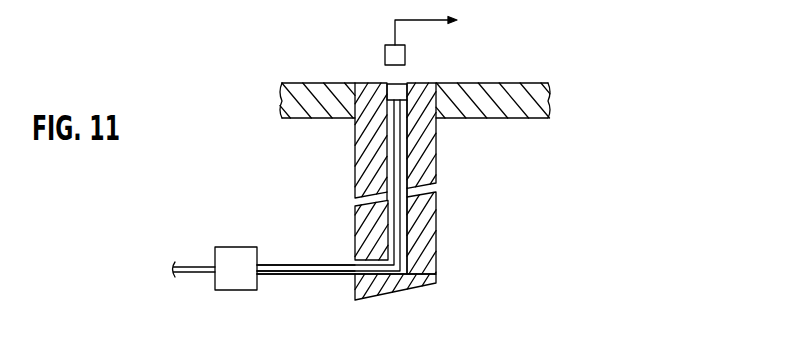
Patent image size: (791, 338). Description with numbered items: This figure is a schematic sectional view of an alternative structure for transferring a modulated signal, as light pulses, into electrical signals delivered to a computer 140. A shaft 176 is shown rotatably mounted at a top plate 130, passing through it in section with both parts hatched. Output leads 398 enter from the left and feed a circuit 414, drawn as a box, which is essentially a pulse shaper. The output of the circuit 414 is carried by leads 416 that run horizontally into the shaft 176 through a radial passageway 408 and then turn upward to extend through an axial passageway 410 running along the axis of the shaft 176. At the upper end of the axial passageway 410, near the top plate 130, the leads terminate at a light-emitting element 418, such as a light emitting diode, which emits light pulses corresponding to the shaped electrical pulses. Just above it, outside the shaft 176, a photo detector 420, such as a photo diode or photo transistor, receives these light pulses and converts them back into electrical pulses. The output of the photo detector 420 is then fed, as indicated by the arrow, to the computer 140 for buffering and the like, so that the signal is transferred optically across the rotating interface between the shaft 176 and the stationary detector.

The top plate 130 is at (478, 92).
The shaft 176 is at (355, 188).
The light-emitting element 418 is at (395, 88).
The photo detector 420 is at (385, 54).
The computer 140 is at (530, 27).
The axial passageway 410 is at (408, 208).
The radial passageway 408 is at (355, 276).
The conduit 416 is at (328, 262).
The circuit 414 is at (226, 250).
The output leads 398 is at (200, 265).